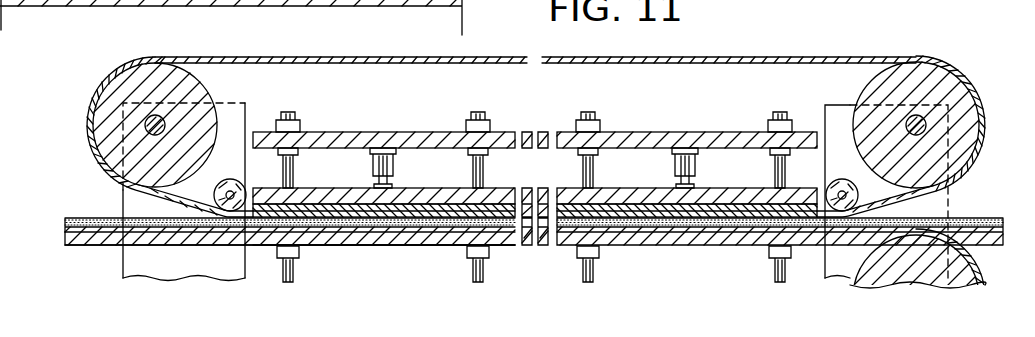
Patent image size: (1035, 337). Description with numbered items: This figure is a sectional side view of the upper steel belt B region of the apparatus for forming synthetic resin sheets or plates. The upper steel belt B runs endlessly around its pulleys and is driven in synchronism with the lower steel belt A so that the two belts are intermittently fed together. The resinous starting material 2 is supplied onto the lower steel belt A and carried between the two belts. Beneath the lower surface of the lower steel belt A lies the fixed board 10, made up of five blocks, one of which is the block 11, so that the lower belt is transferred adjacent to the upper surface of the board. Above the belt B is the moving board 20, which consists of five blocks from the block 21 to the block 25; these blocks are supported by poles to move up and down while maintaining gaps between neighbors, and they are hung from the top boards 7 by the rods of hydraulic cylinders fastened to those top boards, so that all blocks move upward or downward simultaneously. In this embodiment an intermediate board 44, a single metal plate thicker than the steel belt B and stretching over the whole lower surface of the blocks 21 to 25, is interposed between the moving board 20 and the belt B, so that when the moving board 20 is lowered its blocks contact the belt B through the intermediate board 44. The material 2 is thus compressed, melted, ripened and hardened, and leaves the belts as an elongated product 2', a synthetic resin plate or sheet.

The resinous starting material 2 is at (290, 214).
The product 2' is at (780, 214).
The upper steel belt B is at (858, 57).
The top board 7 is at (407, 132).
The block 21 is at (325, 196).
The moving board 20 is at (450, 182).
The intermediate board 44 is at (640, 204).
The block 25 is at (740, 200).
The block 11 is at (344, 246).
The fixed board 10 is at (398, 246).
The lower steel belt A is at (443, 246).